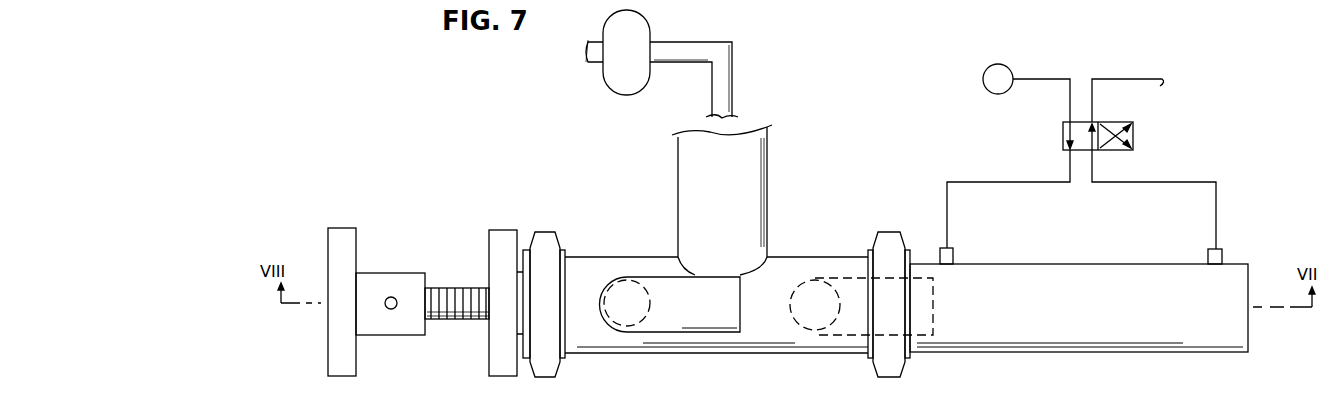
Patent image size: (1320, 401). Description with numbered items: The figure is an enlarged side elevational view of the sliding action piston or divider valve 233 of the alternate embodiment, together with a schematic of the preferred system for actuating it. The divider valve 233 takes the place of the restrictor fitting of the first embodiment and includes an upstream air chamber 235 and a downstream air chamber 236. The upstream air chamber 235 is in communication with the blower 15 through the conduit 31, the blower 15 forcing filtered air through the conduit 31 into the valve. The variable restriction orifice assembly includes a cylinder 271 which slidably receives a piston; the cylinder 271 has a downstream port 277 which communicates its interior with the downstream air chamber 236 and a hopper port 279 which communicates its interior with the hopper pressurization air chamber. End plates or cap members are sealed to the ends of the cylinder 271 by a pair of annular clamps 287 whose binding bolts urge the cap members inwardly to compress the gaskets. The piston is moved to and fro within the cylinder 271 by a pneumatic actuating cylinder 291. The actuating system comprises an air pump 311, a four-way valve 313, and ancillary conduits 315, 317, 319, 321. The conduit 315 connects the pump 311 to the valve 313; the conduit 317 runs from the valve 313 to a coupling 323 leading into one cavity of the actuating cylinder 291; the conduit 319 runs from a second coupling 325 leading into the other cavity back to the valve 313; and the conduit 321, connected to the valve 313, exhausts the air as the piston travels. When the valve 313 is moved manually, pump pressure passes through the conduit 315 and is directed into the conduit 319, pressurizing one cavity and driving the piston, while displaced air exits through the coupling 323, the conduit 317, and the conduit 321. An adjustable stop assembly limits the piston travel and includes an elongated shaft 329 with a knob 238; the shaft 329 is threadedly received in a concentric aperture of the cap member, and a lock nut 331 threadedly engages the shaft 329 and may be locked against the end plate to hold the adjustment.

The sliding action piston or divider valve 233 is at (433, 93).
The knob 238 is at (348, 247).
The elongated shaft 329 is at (455, 295).
The lock nut 331 is at (505, 238).
The annular clamps 287 is at (545, 238).
The cylinder 271 is at (662, 268).
The upstream air chamber 235 is at (748, 214).
The downstream air chamber 236 is at (695, 312).
The downstream port 277 is at (600, 306).
The hopper port 279 is at (812, 290).
The pneumatic actuating cylinder 291 is at (1087, 308).
The coupling 323 is at (953, 253).
The second coupling 325 is at (1222, 253).
The air pump 311 is at (993, 75).
The conduit 315 is at (1047, 78).
The conduit 321 is at (1128, 79).
The four-way valve 313 is at (1165, 132).
The conduit 317 is at (992, 182).
The conduit 319 is at (1217, 193).
The blower 15 is at (640, 35).
The conduit 31 is at (693, 50).